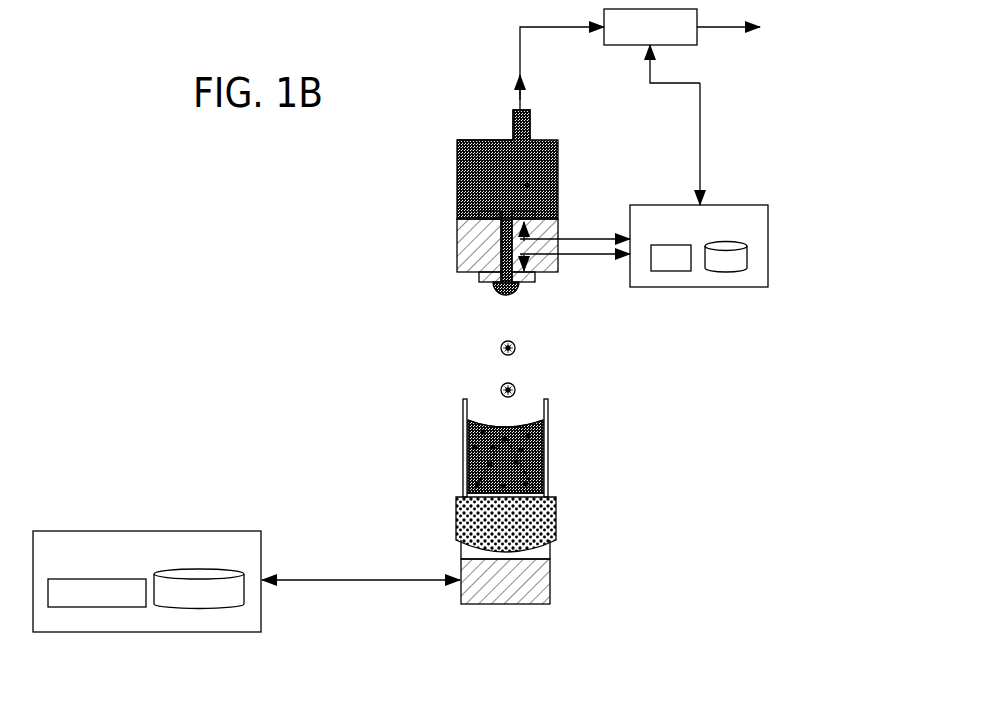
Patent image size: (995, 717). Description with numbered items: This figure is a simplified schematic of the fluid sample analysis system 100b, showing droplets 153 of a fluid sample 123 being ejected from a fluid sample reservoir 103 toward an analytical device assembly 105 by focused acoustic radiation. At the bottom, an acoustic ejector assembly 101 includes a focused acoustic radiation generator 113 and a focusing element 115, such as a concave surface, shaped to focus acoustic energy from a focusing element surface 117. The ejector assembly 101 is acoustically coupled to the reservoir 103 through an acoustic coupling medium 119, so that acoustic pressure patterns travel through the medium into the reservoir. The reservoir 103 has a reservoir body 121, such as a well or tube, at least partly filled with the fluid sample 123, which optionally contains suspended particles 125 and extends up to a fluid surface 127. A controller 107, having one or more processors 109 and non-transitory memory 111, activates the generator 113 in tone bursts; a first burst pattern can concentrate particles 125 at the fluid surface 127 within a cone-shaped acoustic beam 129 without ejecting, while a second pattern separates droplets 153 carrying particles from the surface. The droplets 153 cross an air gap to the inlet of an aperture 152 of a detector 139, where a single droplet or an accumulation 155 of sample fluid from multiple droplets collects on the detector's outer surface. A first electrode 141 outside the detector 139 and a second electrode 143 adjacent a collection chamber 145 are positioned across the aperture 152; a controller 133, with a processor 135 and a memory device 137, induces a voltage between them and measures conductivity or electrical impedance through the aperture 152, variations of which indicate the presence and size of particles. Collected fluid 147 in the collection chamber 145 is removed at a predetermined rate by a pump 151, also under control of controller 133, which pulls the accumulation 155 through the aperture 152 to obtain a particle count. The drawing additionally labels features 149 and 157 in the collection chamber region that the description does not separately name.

The system 100b is at (578, 162).
The acoustic ejector assembly 101 is at (567, 609).
The fluid sample reservoir 103 is at (578, 418).
The analytical device assembly 105 is at (588, 198).
The controller 107 is at (160, 531).
The processors 109 is at (102, 607).
The non-transitory memory 111 is at (200, 608).
The focused acoustic radiation generator 113 is at (460, 590).
The focusing element 115 is at (547, 552).
The focusing element surface 117 is at (498, 548).
The acoustic coupling medium 119 is at (547, 521).
The reservoir body 121 is at (463, 475).
The fluid sample 123 is at (543, 477).
The suspended particles 125 is at (483, 432).
The fluid surface 127 is at (475, 423).
The cone-shaped acoustic beam 129 is at (530, 455).
The controller 133 is at (706, 287).
The processor 135 is at (671, 258).
The memory device 137 is at (726, 257).
The detector 139 is at (457, 240).
The first electrode 141 is at (485, 282).
The second electrode 143 is at (488, 211).
The collection chamber 145 is at (457, 177).
The collected fluid 147 is at (457, 141).
The inlet neck 149 is at (513, 125).
The pump 151 is at (640, 59).
The aperture 152 is at (520, 284).
The droplets 153 is at (501, 388).
The accumulation of sample fluid 155 is at (508, 298).
The fluid 157 is at (527, 185).